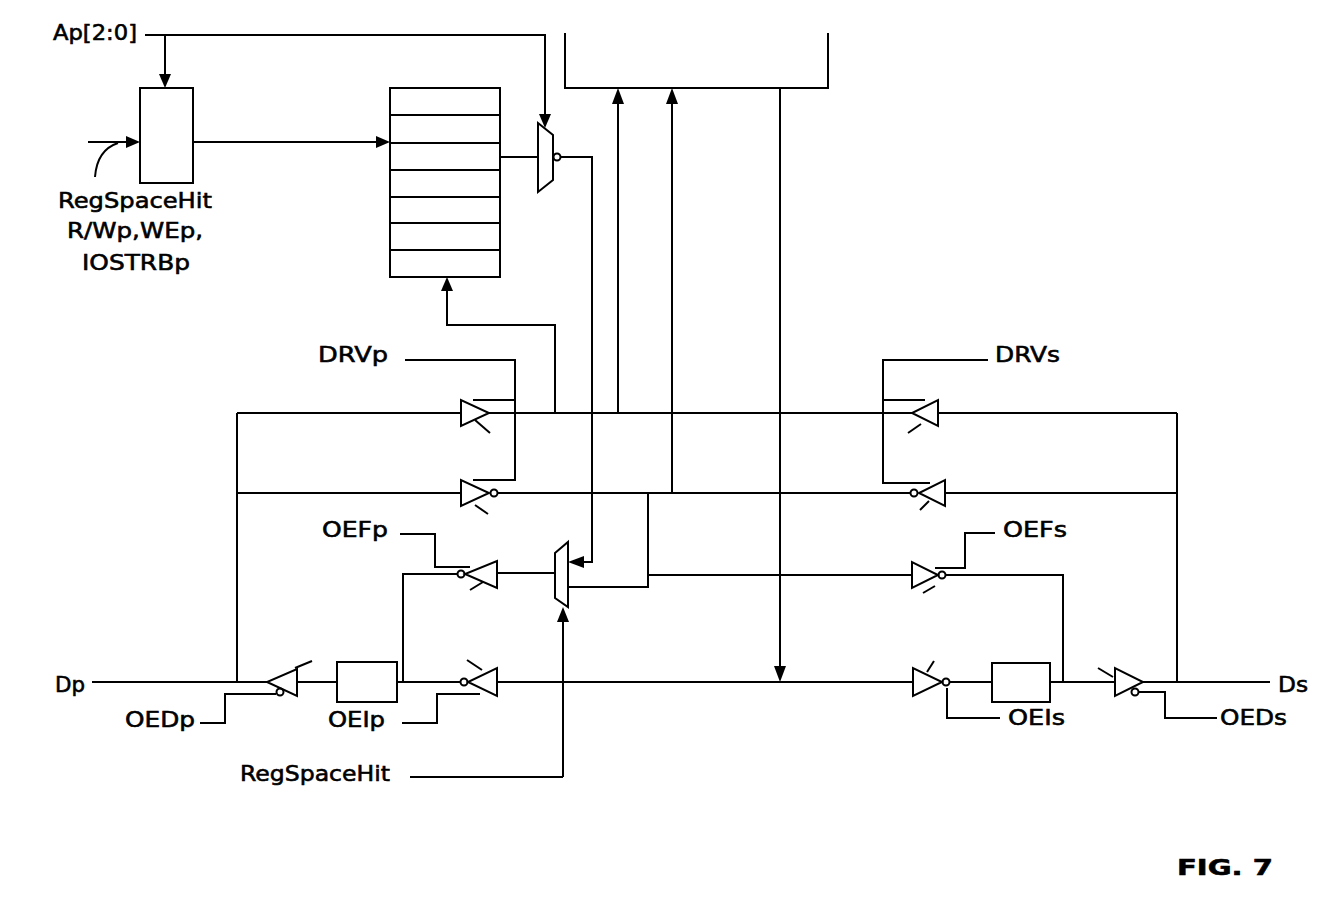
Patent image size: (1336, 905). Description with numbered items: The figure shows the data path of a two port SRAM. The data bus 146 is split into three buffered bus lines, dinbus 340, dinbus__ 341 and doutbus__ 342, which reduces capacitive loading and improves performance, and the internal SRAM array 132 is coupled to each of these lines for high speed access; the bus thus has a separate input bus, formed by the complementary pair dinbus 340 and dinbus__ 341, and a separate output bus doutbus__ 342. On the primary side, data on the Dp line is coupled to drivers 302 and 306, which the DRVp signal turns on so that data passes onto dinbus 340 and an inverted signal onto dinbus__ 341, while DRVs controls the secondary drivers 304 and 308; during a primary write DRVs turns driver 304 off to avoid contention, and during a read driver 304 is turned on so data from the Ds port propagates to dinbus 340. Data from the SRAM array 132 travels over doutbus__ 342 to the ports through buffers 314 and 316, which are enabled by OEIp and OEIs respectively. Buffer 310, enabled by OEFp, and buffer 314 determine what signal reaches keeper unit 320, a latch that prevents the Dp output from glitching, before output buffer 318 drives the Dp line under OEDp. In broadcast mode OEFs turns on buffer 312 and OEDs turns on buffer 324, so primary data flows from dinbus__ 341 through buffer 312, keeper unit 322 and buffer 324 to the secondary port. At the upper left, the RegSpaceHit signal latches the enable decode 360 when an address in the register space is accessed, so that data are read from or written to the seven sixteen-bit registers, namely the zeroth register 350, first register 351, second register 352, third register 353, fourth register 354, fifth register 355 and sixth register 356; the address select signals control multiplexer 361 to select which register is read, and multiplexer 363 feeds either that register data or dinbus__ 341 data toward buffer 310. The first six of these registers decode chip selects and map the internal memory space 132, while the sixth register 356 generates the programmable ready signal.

The SRAM array 132 is at (717, 81).
The data bus 146 is at (176, 404).
The driver 302 is at (488, 434).
The driver 304 is at (910, 430).
The driver 306 is at (483, 510).
The driver 308 is at (918, 508).
The buffer 310 is at (450, 621).
The buffer 312 is at (855, 622).
The buffer 314 is at (449, 681).
The buffer 316 is at (956, 676).
The buffer 318 is at (263, 678).
The keeper unit 320 is at (348, 662).
The keeper unit 322 is at (1007, 663).
The buffer 324 is at (1144, 675).
The dinbus 340 is at (685, 413).
The dinbus__ 341 is at (737, 433).
The doutbus__ 342 is at (755, 622).
The register 0 350 is at (390, 100).
The register 1 351 is at (390, 127).
The register 2 352 is at (390, 157).
The register 3 353 is at (390, 187).
The register 4 354 is at (390, 212).
The register 5 355 is at (390, 240).
The register 6 356 is at (390, 267).
The latch enable decode 360 is at (160, 85).
The multiplexer 361 is at (547, 190).
The multiplexer 363 is at (557, 548).